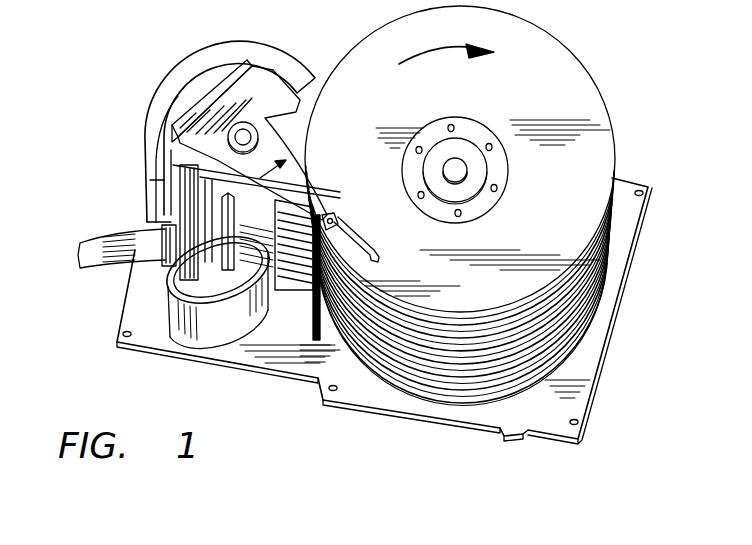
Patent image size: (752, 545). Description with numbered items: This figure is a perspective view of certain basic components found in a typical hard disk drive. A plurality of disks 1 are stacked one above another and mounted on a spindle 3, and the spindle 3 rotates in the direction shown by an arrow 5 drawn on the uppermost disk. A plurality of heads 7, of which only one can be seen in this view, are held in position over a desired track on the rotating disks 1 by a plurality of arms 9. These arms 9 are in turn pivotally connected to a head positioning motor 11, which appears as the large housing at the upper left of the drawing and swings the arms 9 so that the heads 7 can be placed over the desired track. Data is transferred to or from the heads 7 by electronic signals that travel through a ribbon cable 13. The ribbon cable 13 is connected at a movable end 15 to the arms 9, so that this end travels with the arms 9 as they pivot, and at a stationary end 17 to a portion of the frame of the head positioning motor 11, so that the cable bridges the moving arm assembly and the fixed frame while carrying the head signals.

The disks 1 is at (558, 359).
The spindle 3 is at (458, 158).
The arrow 5 is at (421, 56).
The heads 7 is at (377, 256).
The arms 9 is at (300, 173).
The head positioning motor 11 is at (147, 107).
The ribbon cable 13 is at (217, 332).
The movable end 15 is at (232, 197).
The stationary end 17 is at (160, 231).